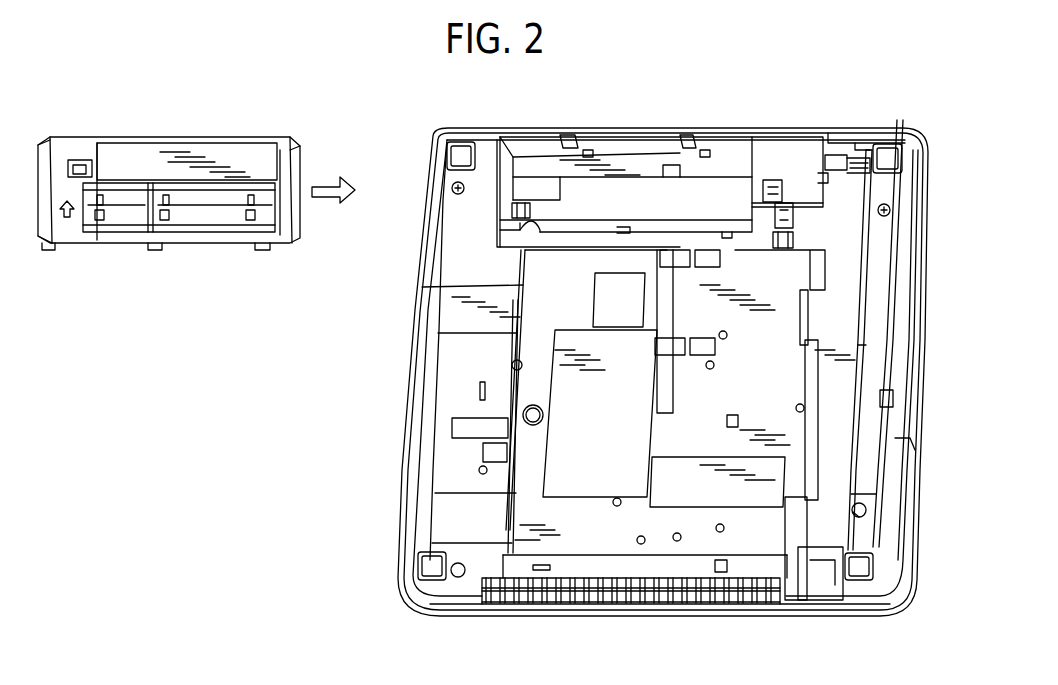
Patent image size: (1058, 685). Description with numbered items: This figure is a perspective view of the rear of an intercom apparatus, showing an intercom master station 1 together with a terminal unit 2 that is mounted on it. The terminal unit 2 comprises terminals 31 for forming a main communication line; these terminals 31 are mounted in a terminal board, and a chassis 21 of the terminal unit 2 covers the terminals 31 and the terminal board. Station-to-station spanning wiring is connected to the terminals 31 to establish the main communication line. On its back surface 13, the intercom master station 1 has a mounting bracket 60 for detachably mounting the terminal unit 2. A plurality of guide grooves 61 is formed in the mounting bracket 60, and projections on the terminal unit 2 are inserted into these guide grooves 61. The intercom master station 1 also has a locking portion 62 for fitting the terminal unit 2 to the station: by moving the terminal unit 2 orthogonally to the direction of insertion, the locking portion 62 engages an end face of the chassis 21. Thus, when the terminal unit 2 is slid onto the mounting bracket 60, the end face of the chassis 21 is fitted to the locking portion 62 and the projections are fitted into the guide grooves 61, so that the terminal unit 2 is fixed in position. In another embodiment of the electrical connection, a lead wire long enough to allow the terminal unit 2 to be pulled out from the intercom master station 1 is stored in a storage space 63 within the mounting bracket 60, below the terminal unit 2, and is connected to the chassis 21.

The intercom master station 1 is at (777, 120).
The terminal unit 2 is at (209, 130).
The back surface 13 is at (861, 122).
The chassis 21 is at (80, 137).
The terminals 31 is at (122, 205).
The mounting bracket 60 is at (641, 198).
The guide grooves 61 is at (568, 135).
The locking portion 62 is at (512, 210).
The storage space 63 is at (532, 167).